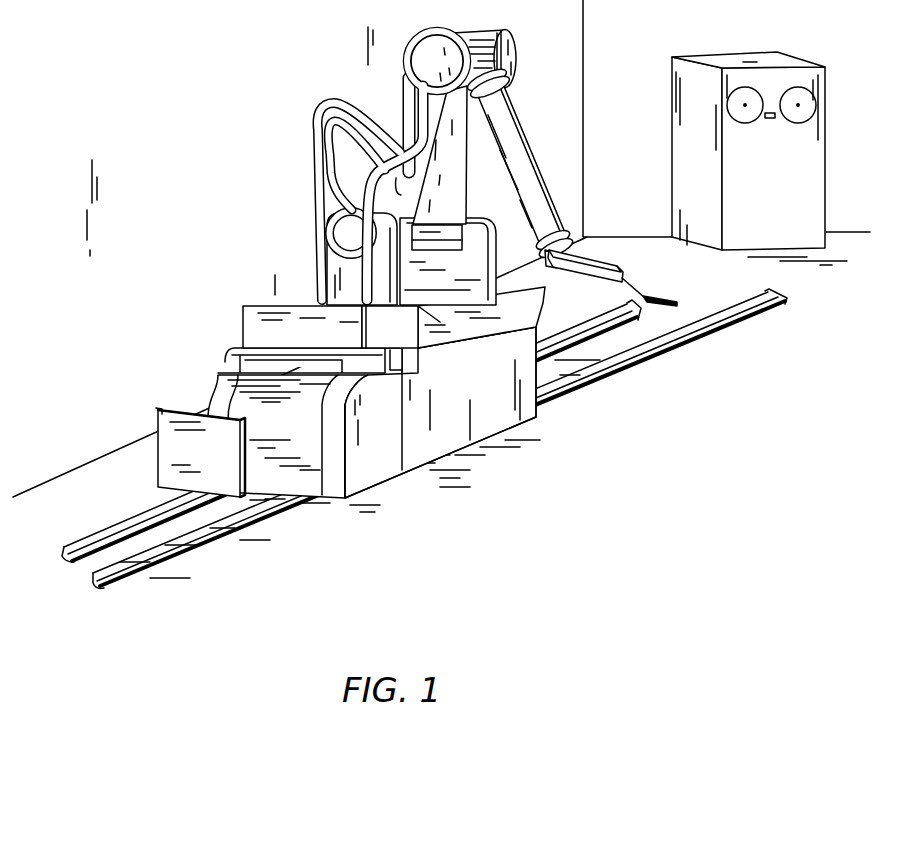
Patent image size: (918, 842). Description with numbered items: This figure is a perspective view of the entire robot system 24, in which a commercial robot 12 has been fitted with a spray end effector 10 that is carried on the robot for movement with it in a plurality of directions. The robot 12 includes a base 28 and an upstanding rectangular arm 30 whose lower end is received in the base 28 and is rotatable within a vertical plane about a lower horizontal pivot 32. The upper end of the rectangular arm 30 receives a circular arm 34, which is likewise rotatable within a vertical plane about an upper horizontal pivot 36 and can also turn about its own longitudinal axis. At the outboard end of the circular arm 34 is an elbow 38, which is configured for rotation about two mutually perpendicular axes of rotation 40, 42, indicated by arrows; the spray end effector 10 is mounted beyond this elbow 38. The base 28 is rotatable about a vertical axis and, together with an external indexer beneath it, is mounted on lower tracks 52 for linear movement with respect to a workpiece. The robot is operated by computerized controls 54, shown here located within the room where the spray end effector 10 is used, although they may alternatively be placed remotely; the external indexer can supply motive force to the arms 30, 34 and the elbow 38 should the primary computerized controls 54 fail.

The spray end effector 10 is at (636, 270).
The robot 12 is at (454, 156).
The robot system 24 is at (592, 249).
The base 28 is at (346, 297).
The rectangular arm 30 is at (322, 150).
The lower horizontal pivot 32 is at (357, 275).
The circular arm 34 is at (507, 118).
The upper horizontal pivot 36 is at (427, 55).
The elbow 38 is at (553, 260).
The axis of rotation 40 is at (566, 232).
The axis of rotation 42 is at (540, 254).
The lower tracks 52 is at (738, 312).
The computerized controls 54 is at (700, 87).